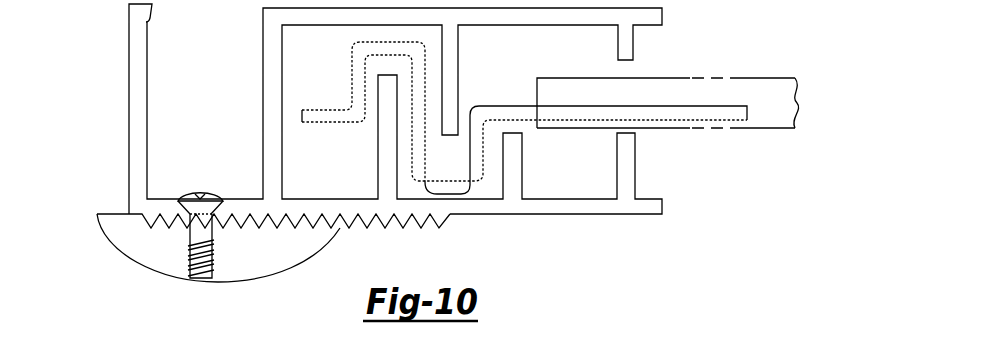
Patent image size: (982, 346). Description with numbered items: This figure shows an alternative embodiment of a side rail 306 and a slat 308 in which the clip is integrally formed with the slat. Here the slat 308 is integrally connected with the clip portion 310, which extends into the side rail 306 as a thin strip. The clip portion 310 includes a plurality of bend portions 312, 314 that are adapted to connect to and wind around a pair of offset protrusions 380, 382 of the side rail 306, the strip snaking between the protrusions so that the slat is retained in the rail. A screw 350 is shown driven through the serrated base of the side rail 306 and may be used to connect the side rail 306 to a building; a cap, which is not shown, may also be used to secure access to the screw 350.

The side rail 306 is at (112, 157).
The slat 308 is at (678, 90).
The clip portion 310 is at (522, 153).
The bend portion 312 is at (410, 185).
The bend portion 314 is at (357, 62).
The screw 350 is at (200, 191).
The offset protrusion 380 is at (452, 70).
The offset protrusion 382 is at (382, 158).